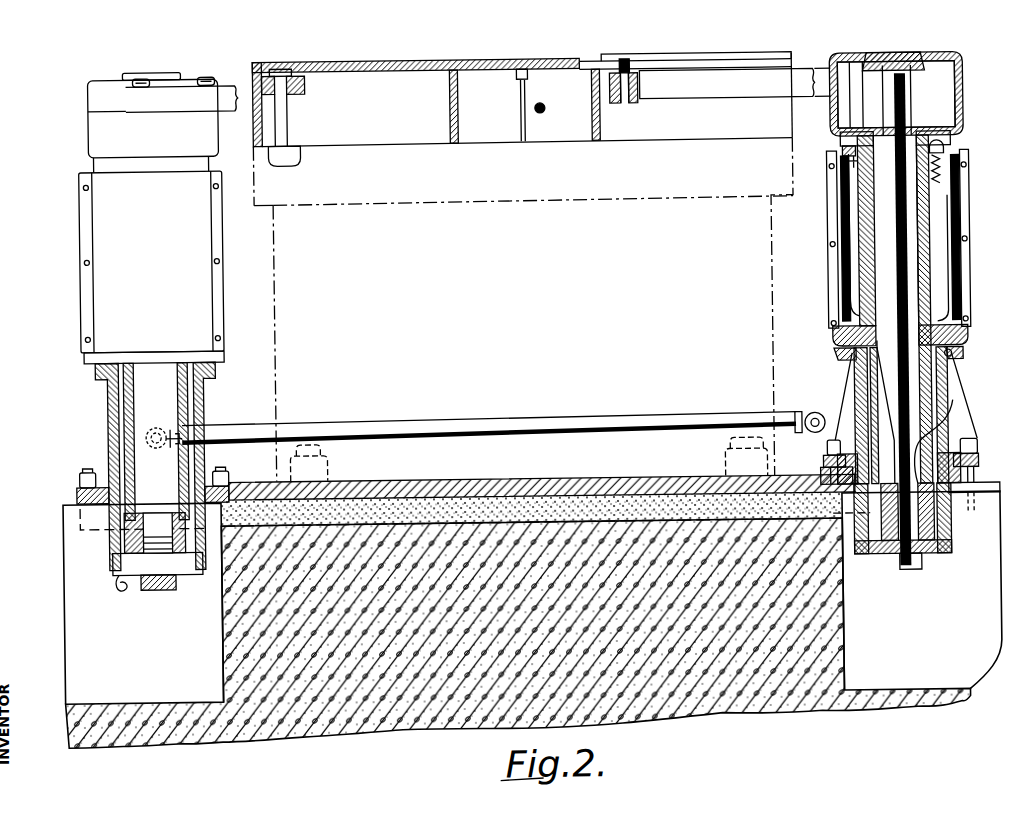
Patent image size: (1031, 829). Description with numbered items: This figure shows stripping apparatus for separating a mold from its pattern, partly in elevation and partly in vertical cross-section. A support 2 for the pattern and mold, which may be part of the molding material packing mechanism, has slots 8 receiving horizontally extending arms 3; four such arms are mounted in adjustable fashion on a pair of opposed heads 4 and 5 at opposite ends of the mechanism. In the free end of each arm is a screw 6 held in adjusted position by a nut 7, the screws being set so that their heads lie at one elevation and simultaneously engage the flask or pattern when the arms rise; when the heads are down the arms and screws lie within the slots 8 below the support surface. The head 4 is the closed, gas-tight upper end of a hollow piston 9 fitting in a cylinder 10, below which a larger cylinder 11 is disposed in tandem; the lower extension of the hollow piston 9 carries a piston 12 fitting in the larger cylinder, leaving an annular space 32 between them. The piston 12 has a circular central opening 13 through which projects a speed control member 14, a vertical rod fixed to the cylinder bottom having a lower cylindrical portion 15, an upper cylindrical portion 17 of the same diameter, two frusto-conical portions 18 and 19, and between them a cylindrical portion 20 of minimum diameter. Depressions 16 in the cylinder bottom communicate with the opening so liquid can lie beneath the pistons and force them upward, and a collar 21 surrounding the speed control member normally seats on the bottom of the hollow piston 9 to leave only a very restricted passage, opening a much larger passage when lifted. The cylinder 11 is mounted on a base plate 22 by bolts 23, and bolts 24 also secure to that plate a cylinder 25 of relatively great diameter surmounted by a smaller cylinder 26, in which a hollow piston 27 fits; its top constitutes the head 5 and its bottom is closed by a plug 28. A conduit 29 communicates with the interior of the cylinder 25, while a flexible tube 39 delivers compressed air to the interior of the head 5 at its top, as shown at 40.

The support 2 is at (355, 60).
The arms 3 is at (228, 86).
The head 4 is at (947, 57).
The head 5 is at (107, 83).
The screw 6 is at (631, 59).
The nut 7 is at (641, 76).
The slots 8 is at (707, 56).
The hollow piston 9 is at (934, 233).
The cylinder 10 is at (923, 246).
The larger cylinder 11 is at (950, 383).
The piston 12 is at (922, 514).
The circular central opening 13 is at (874, 560).
The speed control member 14 is at (950, 153).
The lower cylindrical portion 15 is at (988, 492).
The depressions 16 is at (915, 571).
The upper cylindrical portion 17 is at (912, 94).
The lower frusto-conical portion 18 is at (944, 432).
The upper frusto-conical portion 19 is at (954, 360).
The cylindrical portion of minimum diameter 20 is at (916, 402).
The collar 21 is at (968, 432).
The base plate 22 is at (579, 480).
The bolts 23 is at (980, 466).
The bolts 24 is at (226, 484).
The cylinder 25 is at (112, 426).
The cylinder 26 is at (108, 295).
The hollow piston 27 is at (128, 400).
The plug 28 is at (153, 532).
The conduit 29 is at (614, 421).
The annular space 32 is at (858, 388).
The flexible tube 39 is at (947, 210).
The connection to head 40 is at (858, 63).